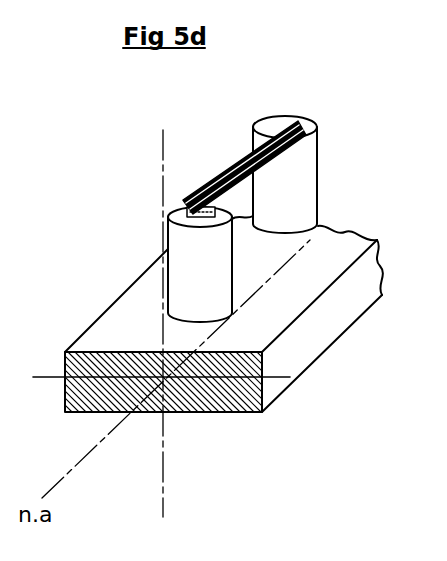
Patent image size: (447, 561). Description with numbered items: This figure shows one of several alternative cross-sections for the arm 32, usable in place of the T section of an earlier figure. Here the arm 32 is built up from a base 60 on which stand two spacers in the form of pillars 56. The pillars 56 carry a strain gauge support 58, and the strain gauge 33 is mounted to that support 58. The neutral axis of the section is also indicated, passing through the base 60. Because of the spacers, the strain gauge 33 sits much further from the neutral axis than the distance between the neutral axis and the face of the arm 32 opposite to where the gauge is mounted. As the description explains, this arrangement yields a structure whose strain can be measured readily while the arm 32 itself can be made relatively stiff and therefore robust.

The arm 32 is at (183, 137).
The strain gauge 33 is at (242, 150).
The pillars 56 is at (305, 165).
The strain gauge support 58 is at (268, 168).
The base 60 is at (310, 314).